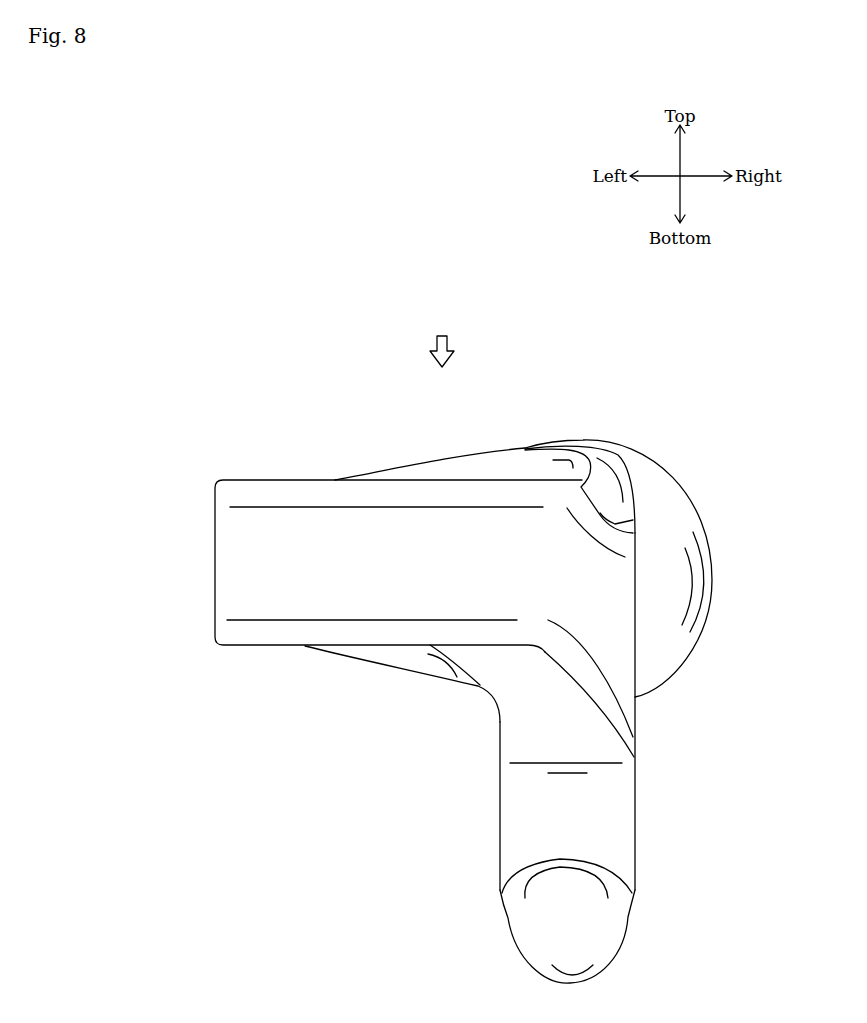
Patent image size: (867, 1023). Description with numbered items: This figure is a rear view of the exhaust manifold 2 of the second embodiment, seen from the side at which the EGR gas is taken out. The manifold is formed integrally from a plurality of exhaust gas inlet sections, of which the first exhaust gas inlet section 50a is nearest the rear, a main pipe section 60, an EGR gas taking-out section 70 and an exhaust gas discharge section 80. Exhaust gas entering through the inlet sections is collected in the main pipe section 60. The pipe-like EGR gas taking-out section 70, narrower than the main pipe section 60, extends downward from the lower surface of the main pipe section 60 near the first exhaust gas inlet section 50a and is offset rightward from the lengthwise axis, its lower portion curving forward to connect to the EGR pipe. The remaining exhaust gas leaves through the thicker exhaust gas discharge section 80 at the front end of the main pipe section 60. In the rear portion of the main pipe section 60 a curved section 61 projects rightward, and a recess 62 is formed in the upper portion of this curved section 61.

The exhaust manifold 2 is at (451, 332).
The exhaust gas inlet section 50a is at (223, 569).
The main pipe section 60 is at (413, 702).
The curved section 61 is at (617, 613).
The recess 62 is at (633, 520).
The EGR gas taking-out section 70 is at (630, 830).
The exhaust gas discharge section 80 is at (650, 472).